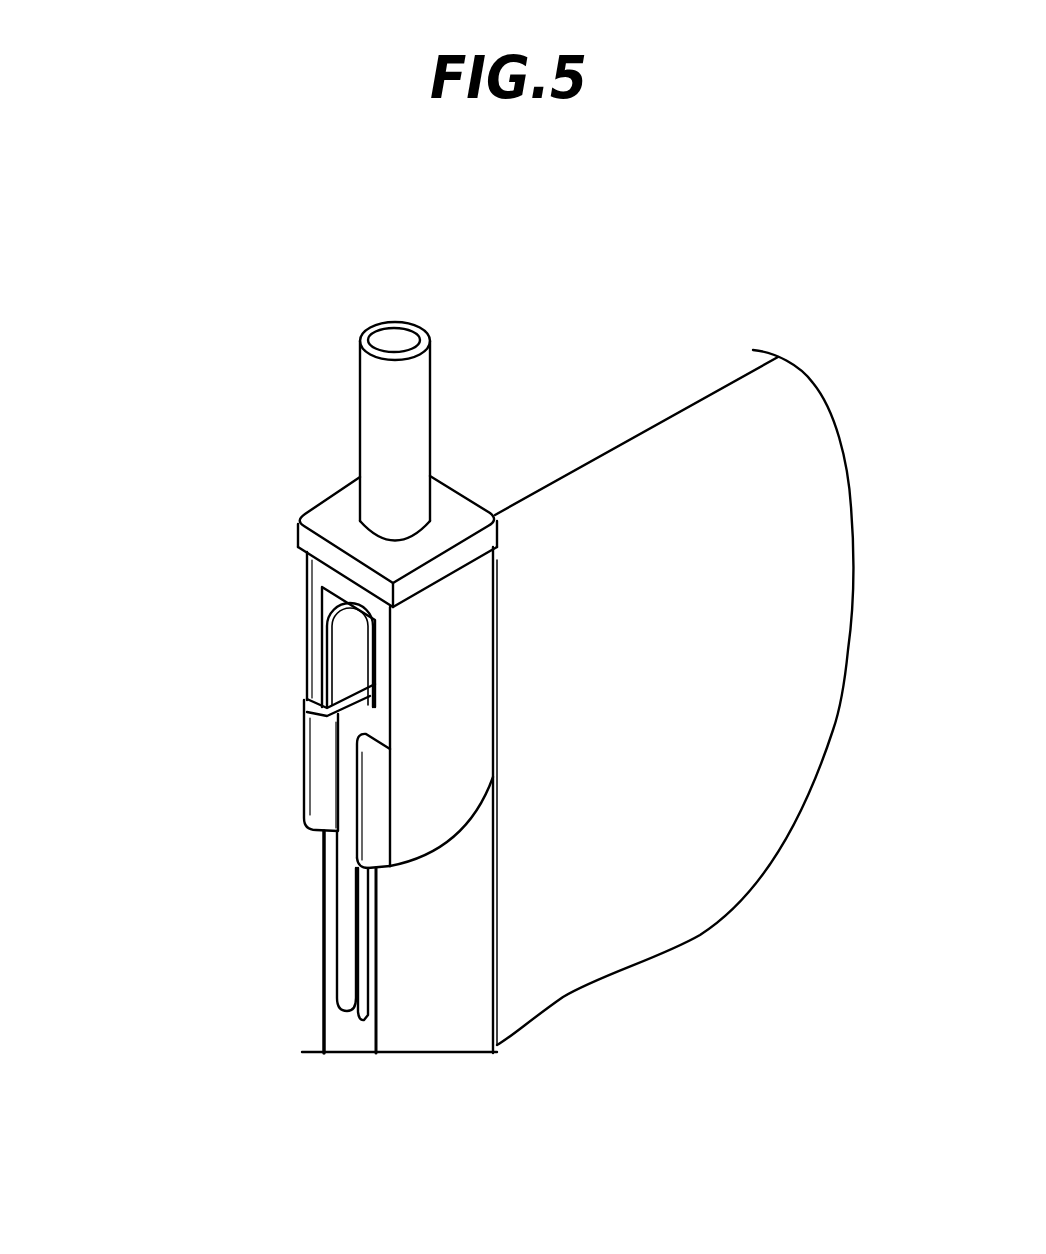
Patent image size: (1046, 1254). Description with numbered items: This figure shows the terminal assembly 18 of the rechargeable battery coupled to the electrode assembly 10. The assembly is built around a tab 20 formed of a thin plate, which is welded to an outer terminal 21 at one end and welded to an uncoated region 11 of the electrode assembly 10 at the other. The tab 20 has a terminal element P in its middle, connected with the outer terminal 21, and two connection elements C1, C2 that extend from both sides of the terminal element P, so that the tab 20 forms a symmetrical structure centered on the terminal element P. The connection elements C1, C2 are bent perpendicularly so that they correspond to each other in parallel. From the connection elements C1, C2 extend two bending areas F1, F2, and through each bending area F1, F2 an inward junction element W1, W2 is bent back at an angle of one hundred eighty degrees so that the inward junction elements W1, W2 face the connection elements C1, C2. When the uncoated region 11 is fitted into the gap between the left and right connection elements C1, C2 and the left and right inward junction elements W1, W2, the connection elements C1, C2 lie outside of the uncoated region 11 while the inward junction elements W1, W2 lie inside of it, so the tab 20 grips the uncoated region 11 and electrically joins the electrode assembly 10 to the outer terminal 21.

The electrode assembly 10 is at (750, 780).
The uncoated region 11 is at (350, 1023).
The terminal assembly 18 is at (188, 538).
The tab 20 is at (273, 709).
The outer terminal 21 is at (366, 392).
The terminal element P is at (327, 580).
The connection element C1 is at (312, 640).
The connection element C2 is at (458, 681).
The bending area F1 is at (292, 775).
The bending area F2 is at (348, 816).
The inward junction element W1 is at (330, 923).
The inward junction element W2 is at (363, 958).